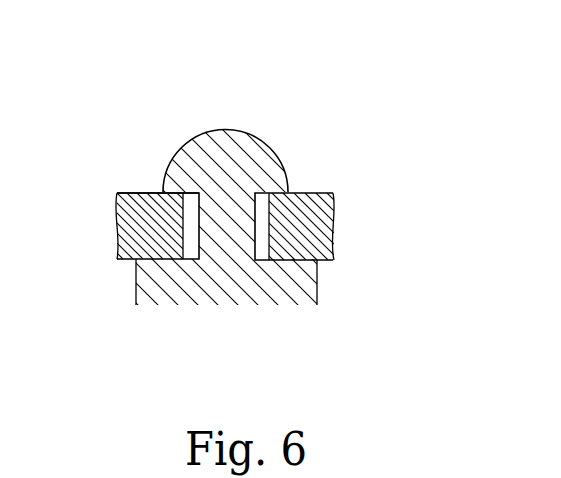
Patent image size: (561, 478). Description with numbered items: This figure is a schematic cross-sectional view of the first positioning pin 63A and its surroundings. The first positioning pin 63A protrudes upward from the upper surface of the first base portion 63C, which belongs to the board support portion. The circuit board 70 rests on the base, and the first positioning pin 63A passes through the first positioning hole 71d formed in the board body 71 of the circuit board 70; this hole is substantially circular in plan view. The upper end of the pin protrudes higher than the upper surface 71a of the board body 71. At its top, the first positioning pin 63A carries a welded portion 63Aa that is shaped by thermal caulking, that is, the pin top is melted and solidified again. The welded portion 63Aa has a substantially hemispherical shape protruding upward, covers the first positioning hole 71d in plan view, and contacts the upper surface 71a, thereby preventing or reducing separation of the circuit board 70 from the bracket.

The first positioning pin 63A is at (229, 190).
The welded portion 63Aa is at (277, 152).
The first base portion 63C is at (303, 285).
The circuit board 70 is at (225, 220).
The board body 71 is at (150, 229).
The upper surface of the board body 71a is at (127, 192).
The first positioning hole 71d is at (183, 242).